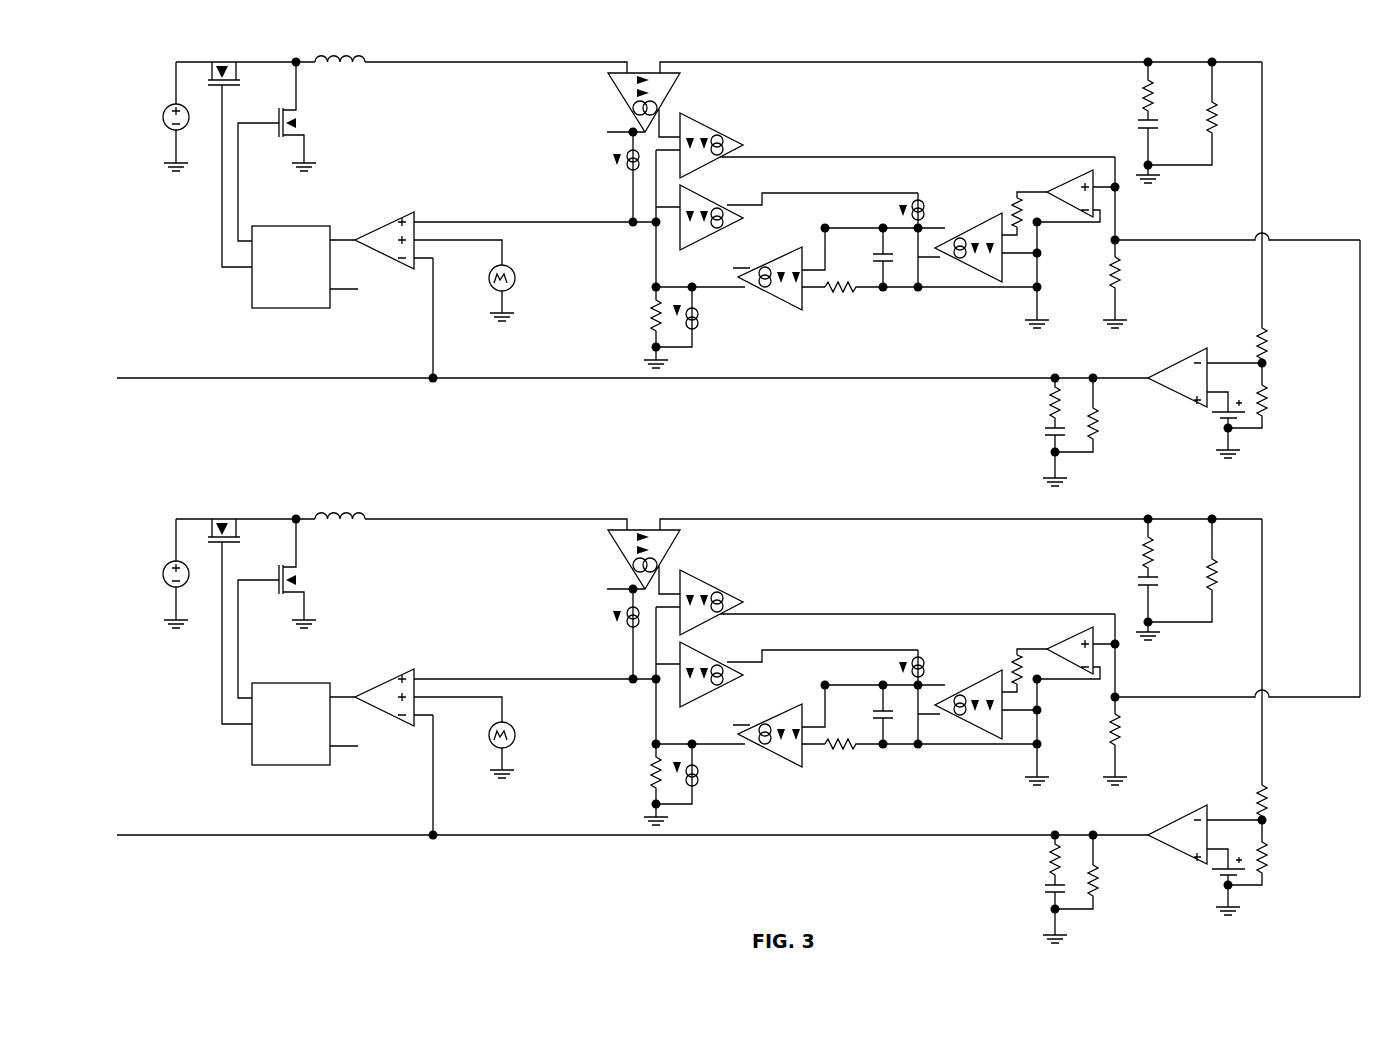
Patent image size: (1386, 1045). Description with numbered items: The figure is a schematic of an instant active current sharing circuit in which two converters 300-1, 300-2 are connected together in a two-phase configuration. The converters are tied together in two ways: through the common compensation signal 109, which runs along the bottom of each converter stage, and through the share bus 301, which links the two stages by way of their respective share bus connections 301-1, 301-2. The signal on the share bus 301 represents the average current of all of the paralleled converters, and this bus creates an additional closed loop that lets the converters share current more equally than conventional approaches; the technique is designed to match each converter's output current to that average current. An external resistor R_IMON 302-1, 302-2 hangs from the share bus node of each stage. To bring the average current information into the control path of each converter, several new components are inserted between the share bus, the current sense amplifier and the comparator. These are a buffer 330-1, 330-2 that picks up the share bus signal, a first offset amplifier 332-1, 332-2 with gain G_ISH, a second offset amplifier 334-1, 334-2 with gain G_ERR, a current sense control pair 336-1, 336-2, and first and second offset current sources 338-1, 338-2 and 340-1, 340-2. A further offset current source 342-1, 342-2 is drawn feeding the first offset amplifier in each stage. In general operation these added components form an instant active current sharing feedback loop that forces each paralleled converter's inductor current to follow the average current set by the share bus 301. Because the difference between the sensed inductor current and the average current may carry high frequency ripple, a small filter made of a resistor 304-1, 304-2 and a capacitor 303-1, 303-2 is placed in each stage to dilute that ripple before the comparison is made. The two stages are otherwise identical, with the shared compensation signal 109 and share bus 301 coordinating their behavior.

The converter 300-1 is at (163, 212).
The converter 300-2 is at (741, 716).
The first offset current source 338-1 is at (597, 177).
The first offset current source 338-2 is at (597, 634).
The current sense control pair 336-1 is at (897, 178).
The current sense control pair 336-2 is at (897, 635).
The second offset amplifier 334-1 is at (740, 272).
The second offset amplifier 334-2 is at (740, 729).
The third offset current source 342-1 is at (871, 229).
The third offset current source 342-2 is at (871, 686).
The capacitor 303-1 is at (859, 260).
The capacitor 303-2 is at (859, 717).
The first offset amplifier 332-1 is at (981, 230).
The first offset amplifier 332-2 is at (981, 687).
The buffer 330-1 is at (1067, 242).
The buffer 330-2 is at (1067, 699).
The external resistor R_IMON 302-1 is at (1141, 292).
The external resistor R_IMON 302-2 is at (1141, 749).
The resistor 304-1 is at (928, 300).
The resistor 304-2 is at (928, 757).
The second offset current source 340-1 is at (691, 295).
The second offset current source 340-2 is at (691, 752).
The share bus connection 301-1 is at (1237, 228).
The share bus connection 301-2 is at (1237, 685).
The share bus 301 is at (1328, 468).
The compensation signal 109 is at (632, 549).